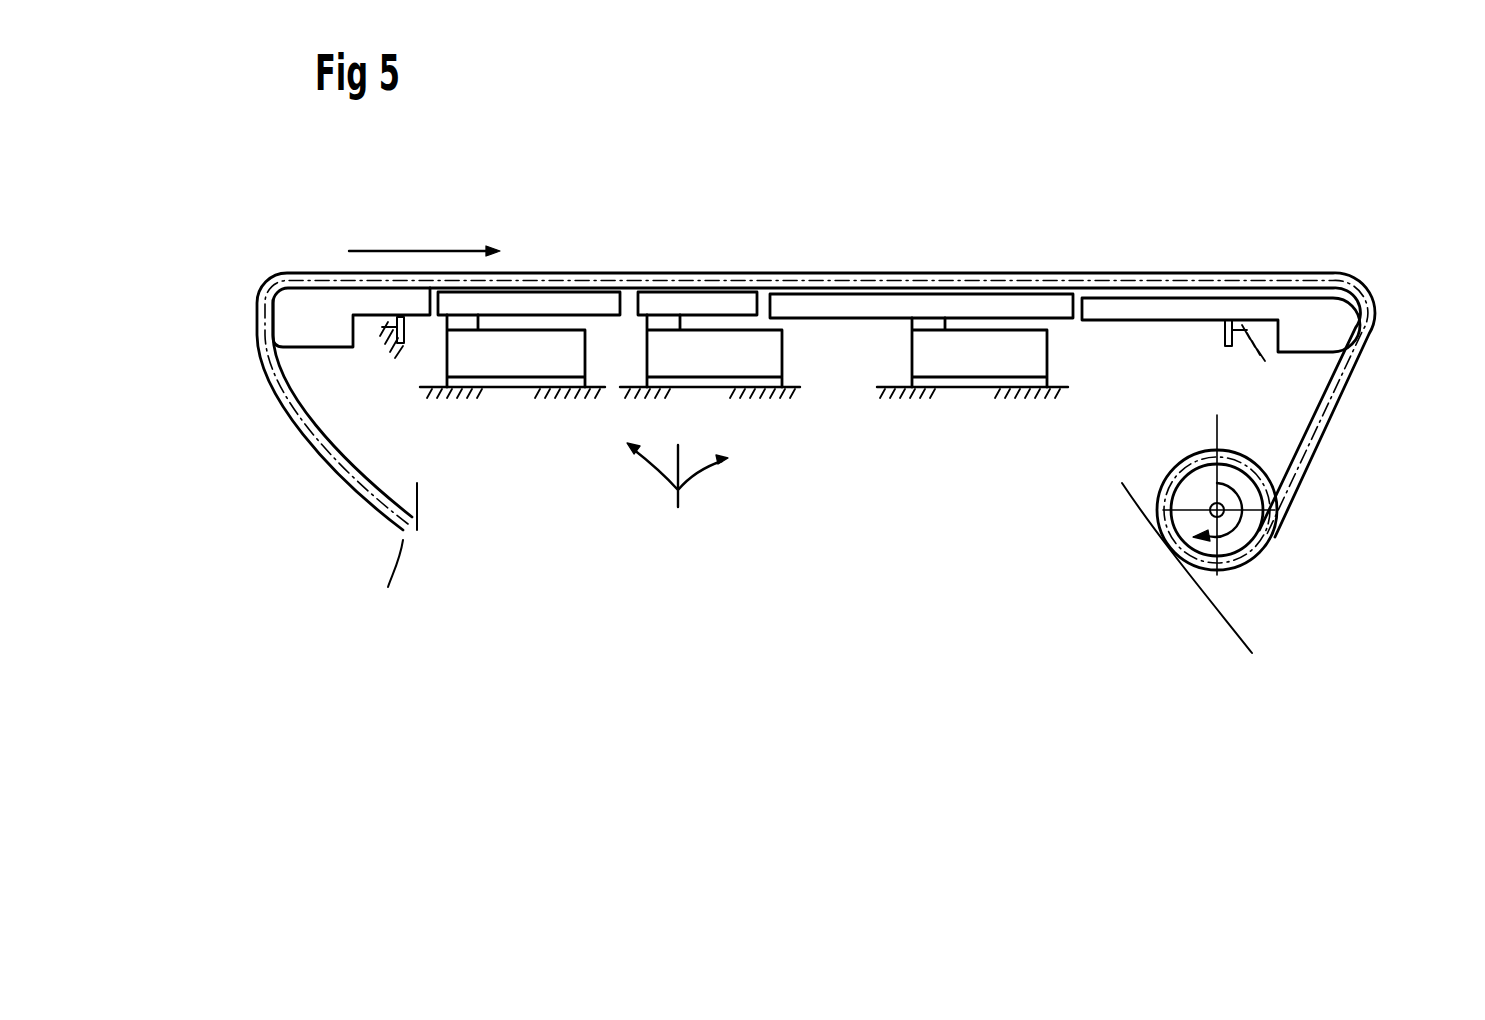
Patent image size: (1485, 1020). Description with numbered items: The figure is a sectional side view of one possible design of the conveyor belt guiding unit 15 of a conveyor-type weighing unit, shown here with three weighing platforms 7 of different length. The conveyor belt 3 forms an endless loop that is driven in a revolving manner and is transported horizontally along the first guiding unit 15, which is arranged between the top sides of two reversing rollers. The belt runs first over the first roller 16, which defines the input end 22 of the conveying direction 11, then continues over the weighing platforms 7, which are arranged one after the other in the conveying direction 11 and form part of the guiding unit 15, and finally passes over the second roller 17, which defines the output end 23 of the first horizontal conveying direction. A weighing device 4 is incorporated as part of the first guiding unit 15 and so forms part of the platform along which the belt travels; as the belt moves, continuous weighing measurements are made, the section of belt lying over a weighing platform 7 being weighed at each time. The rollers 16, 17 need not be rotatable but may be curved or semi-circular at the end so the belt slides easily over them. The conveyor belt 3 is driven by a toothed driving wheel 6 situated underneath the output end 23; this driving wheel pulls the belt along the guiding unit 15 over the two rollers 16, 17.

The conveyor belt 3 is at (377, 520).
The weighing device 4 is at (677, 495).
The driving unit 6 is at (1262, 535).
The weighing platform 7 is at (533, 303).
The conveying direction 11 is at (408, 250).
The first guiding unit 15 is at (1090, 298).
The first roller 16 is at (260, 357).
The second roller 17 is at (1332, 320).
The input end 22 is at (282, 236).
The output end 23 is at (1334, 255).